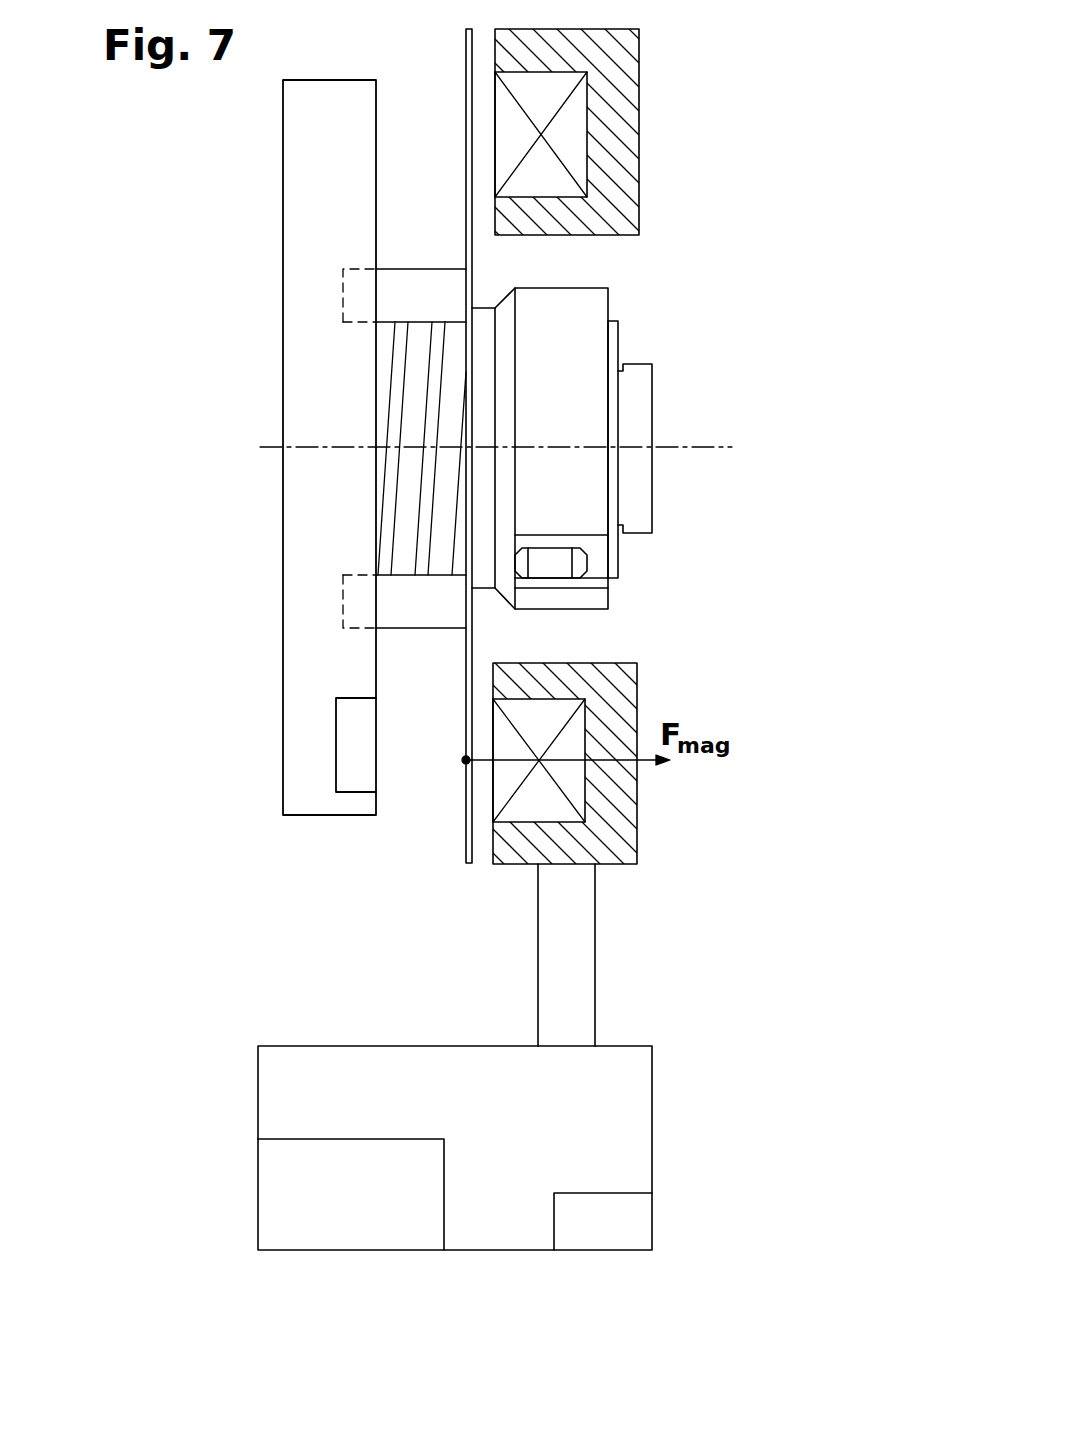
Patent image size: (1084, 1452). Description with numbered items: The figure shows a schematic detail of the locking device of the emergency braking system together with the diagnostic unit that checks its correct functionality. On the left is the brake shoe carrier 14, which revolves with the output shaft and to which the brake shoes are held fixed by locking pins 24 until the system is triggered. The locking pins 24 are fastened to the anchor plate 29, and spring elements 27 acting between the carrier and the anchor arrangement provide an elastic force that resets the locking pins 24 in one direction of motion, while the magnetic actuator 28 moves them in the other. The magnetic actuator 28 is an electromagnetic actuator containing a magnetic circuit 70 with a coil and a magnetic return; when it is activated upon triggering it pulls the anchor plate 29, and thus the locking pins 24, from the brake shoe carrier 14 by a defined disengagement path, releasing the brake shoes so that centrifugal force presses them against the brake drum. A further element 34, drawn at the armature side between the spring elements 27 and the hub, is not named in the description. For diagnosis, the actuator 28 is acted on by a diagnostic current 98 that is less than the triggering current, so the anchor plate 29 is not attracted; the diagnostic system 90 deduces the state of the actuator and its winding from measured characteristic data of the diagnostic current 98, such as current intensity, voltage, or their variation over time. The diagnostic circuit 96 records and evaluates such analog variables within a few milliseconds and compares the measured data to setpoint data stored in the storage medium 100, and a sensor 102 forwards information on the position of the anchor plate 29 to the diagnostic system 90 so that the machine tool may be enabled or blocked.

The magnetic circuit 70 is at (401, 132).
The magnetic actuator 28 is at (515, 93).
The locking pins 24 is at (423, 293).
The spring elements 27 is at (400, 375).
The armature plate 34 is at (483, 423).
The brake shoe carrier 14 is at (335, 500).
The anchor plate 29 is at (470, 610).
The sensor 102 is at (355, 750).
The diagnostic current 98 is at (636, 928).
The diagnostic system 90 is at (604, 1138).
The storage medium 100 is at (352, 1200).
The diagnostic circuit 96 is at (604, 1229).